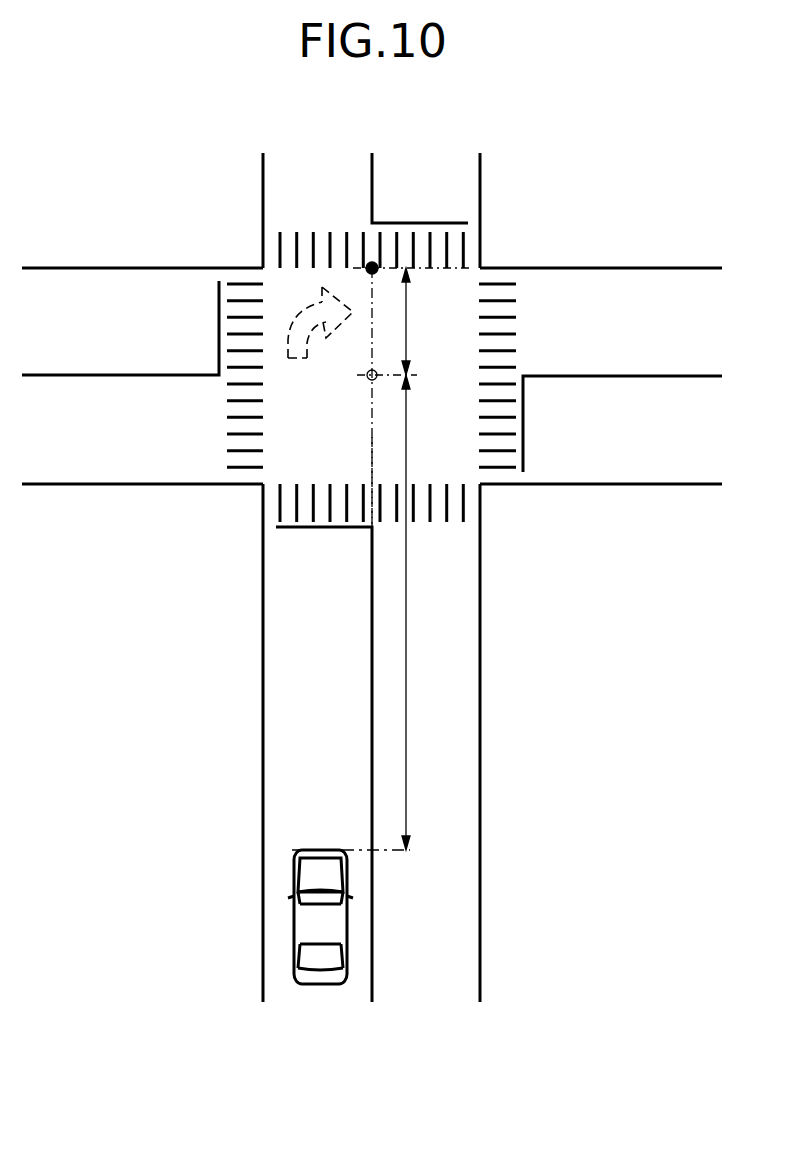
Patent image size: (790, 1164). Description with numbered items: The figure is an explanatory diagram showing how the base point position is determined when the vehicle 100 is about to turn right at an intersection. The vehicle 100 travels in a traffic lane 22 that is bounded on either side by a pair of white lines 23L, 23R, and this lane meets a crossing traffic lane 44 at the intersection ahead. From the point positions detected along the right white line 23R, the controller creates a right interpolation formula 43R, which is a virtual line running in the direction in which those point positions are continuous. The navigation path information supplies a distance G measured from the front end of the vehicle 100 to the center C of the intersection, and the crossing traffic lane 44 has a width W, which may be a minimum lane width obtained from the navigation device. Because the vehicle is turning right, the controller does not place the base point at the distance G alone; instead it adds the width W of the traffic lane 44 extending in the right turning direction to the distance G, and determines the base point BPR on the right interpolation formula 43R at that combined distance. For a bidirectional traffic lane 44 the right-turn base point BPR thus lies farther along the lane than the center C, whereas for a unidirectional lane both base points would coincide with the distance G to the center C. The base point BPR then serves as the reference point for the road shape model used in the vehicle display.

The base point for right turn BPR is at (372, 268).
The center of the intersection C is at (372, 375).
The width of the traffic lane W is at (406, 335).
The traffic lane 44 is at (650, 292).
The right interpolation formula 43R is at (372, 437).
The traffic lane 22 is at (298, 747).
The distance G is at (406, 689).
The vehicle 100 is at (295, 876).
The left white line 23L is at (263, 957).
The right white line 23R is at (372, 919).